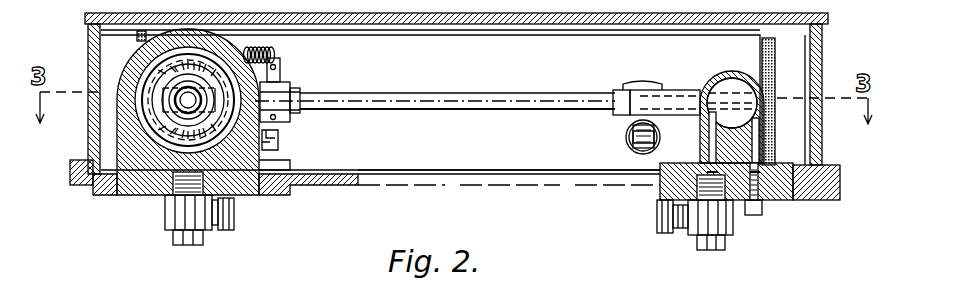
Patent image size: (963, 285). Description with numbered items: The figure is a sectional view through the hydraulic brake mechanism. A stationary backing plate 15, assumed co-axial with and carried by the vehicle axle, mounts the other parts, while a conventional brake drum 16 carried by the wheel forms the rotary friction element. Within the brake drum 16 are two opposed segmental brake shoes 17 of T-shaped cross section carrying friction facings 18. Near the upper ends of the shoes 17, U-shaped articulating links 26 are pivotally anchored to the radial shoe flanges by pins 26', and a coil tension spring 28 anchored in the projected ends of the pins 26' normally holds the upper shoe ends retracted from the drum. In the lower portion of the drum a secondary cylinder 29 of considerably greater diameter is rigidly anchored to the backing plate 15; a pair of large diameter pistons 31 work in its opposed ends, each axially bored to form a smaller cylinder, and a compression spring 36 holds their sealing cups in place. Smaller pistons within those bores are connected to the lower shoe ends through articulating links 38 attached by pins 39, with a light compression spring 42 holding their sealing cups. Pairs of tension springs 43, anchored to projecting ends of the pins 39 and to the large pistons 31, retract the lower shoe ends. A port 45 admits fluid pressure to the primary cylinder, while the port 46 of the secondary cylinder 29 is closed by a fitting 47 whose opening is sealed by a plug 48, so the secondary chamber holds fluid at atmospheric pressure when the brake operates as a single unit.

The backing plate 15 is at (98, 195).
The brake drum 16 is at (93, 128).
The segmental brake shoes 17 is at (407, 102).
The friction facings 18 is at (137, 38).
The articulating links 26 is at (685, 93).
The pins 26' is at (626, 151).
The coil tension spring 28 is at (628, 136).
The secondary cylinder 29 is at (127, 68).
The large diameter pistons 31 is at (133, 102).
The compression spring 36 is at (72, 173).
The articulating links 38 is at (300, 90).
The pins 39 is at (283, 77).
The compression spring 42 is at (173, 117).
The tension springs 43 is at (276, 58).
The port 45 is at (712, 128).
The port 46 is at (262, 165).
The fitting 47 is at (197, 212).
The plug 48 is at (234, 213).